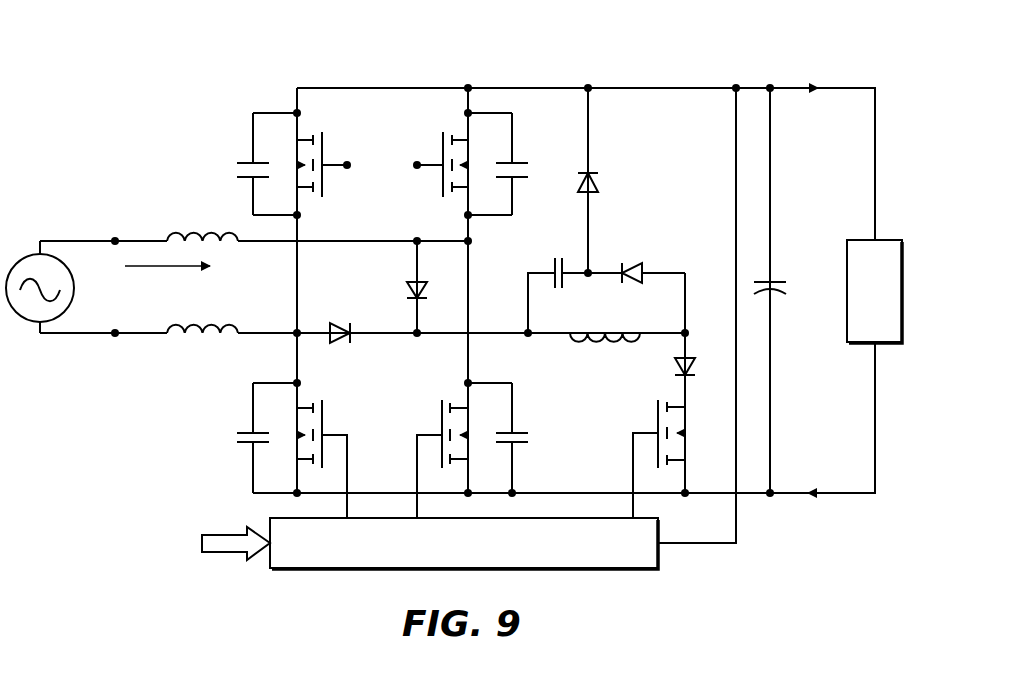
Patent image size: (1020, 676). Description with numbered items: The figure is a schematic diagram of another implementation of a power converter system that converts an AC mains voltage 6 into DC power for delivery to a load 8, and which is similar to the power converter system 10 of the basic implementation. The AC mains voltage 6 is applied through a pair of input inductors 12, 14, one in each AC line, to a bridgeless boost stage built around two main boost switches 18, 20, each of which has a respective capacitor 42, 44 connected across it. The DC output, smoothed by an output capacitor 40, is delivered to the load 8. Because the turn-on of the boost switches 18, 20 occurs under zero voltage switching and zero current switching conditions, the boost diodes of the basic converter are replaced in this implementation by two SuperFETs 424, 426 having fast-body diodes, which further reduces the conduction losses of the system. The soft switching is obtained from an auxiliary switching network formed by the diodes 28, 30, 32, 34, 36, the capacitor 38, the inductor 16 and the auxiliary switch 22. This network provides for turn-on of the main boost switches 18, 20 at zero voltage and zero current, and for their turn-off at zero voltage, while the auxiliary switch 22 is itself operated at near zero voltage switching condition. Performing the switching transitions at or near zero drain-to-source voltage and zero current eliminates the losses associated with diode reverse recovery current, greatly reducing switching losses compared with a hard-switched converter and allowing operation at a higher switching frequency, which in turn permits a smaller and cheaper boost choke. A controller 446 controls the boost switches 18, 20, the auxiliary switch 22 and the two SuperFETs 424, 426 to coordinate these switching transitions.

The power converter system 10 is at (193, 62).
The AC mains voltage 6 is at (20, 318).
The load 8 is at (847, 252).
The inductor 12 is at (213, 228).
The inductor 14 is at (228, 322).
The inductor 16 is at (570, 340).
The switch 18 is at (328, 430).
The switch 20 is at (438, 428).
The switch 22 is at (690, 440).
The diode 28 is at (598, 178).
The diode 30 is at (330, 325).
The diode 32 is at (410, 280).
The diode 34 is at (645, 265).
The diode 36 is at (677, 360).
The capacitor 38 is at (553, 260).
The capacitor 40 is at (790, 294).
The capacitor 42 is at (248, 430).
The capacitor 44 is at (524, 432).
The SuperFET 424 is at (330, 158).
The SuperFET 426 is at (514, 157).
The controller 446 is at (628, 570).